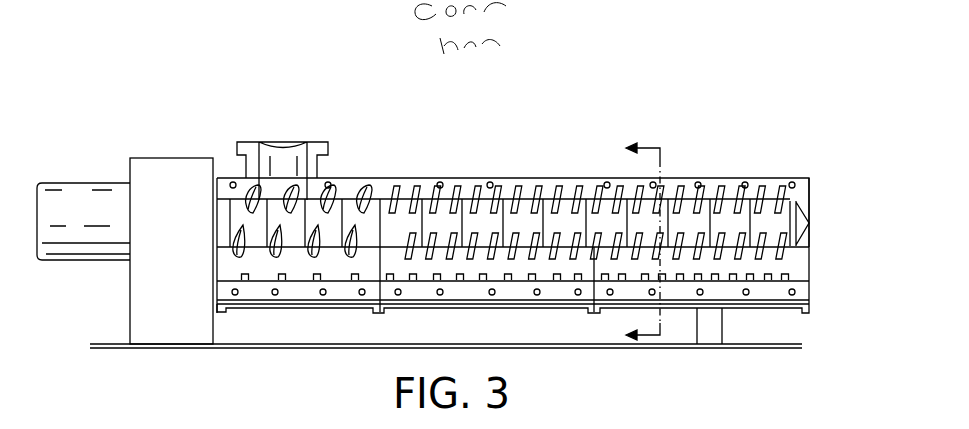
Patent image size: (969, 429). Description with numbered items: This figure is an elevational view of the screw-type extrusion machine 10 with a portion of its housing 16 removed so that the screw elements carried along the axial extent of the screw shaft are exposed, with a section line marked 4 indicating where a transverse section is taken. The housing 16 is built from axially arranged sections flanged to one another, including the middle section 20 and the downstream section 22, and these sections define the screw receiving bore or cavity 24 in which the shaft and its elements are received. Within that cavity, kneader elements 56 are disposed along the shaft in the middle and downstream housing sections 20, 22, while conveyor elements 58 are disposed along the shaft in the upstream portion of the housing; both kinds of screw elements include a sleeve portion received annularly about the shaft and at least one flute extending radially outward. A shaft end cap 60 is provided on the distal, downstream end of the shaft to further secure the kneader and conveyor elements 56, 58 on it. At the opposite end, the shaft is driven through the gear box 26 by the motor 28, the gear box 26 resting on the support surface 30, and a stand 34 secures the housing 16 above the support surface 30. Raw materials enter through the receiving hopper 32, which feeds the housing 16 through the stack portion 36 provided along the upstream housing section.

The screw-type extrusion machine 10 is at (521, 66).
The housing 16 is at (413, 298).
The middle section 20 is at (236, 294).
The downstream section 22 is at (466, 290).
The screw receiving bore or cavity 24 is at (799, 288).
The gear box 26 is at (167, 175).
The motor 28 is at (72, 205).
The support surface 30 is at (565, 347).
The receiving hopper 32 is at (228, 247).
The stand 34 is at (716, 324).
The stack portion 36 is at (290, 160).
The kneader elements 56 is at (411, 196).
The conveyor elements 58 is at (345, 283).
The shaft end cap 60 is at (811, 223).
The section line 4- 4 is at (632, 242).